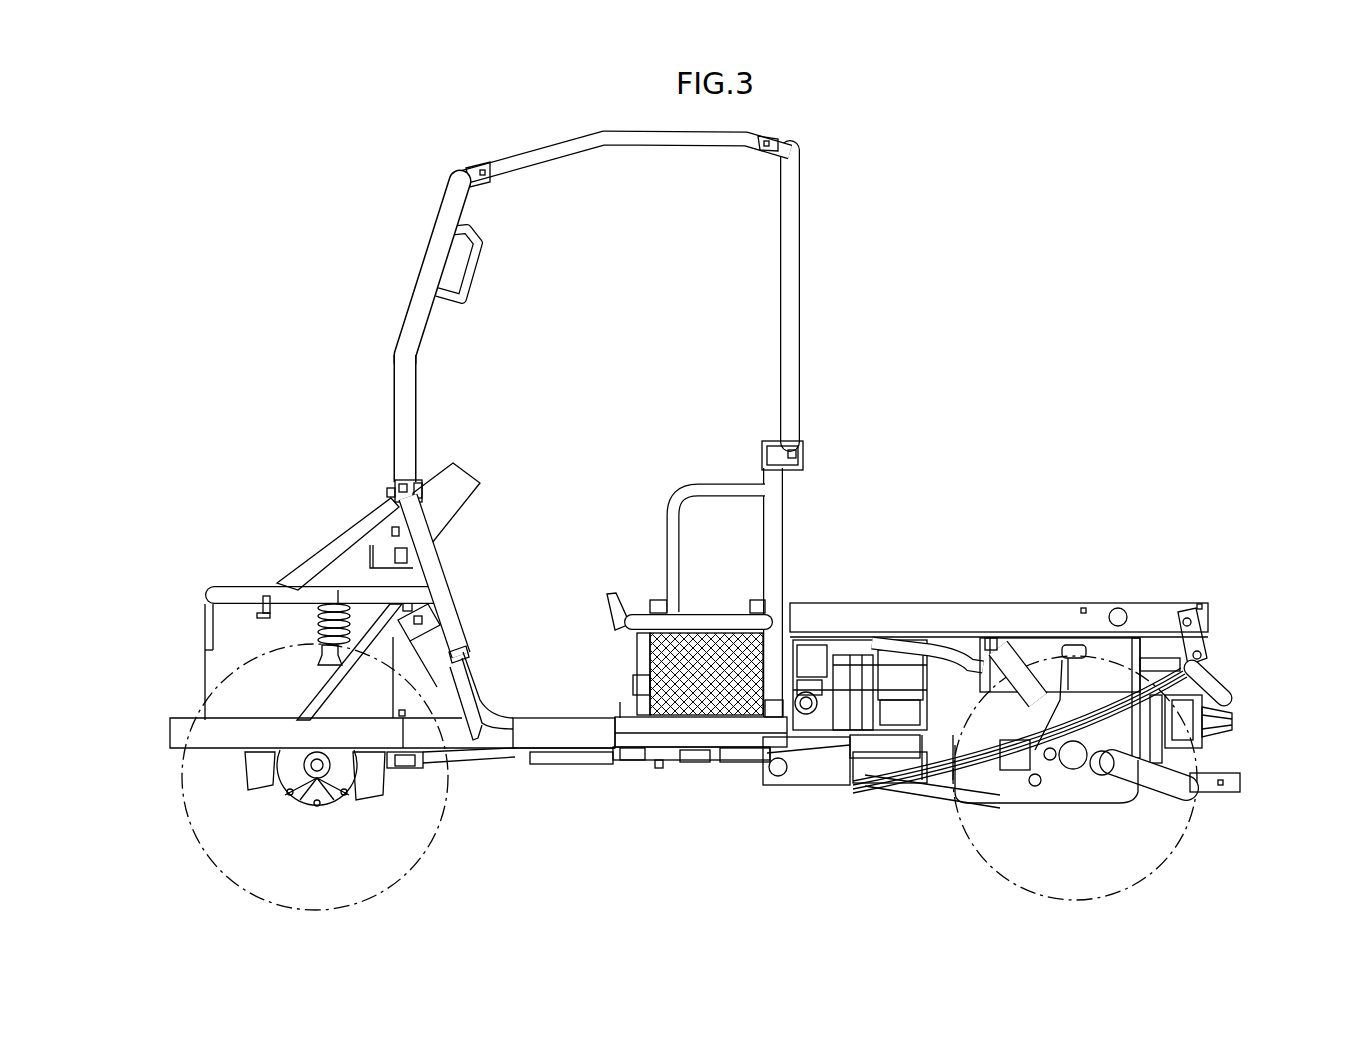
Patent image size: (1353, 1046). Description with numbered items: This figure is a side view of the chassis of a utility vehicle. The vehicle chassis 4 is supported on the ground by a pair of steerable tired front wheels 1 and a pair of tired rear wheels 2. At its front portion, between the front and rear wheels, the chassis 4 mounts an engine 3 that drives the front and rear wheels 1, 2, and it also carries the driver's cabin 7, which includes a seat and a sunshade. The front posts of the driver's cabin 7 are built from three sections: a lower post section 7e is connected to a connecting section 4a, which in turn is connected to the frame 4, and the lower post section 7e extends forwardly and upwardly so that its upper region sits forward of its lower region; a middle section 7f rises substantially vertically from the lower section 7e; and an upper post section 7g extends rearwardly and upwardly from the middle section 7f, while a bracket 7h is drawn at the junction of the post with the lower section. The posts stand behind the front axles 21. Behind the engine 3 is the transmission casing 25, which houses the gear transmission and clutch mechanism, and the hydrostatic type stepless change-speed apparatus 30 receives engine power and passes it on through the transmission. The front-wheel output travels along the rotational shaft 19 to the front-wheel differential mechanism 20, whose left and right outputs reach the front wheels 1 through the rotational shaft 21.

The front wheels 1 is at (197, 851).
The rear wheels 2 is at (1181, 829).
The engine 3 is at (838, 697).
The vehicle chassis 4 is at (920, 613).
The connecting section 4a is at (468, 650).
The driver's cabin 7 is at (449, 367).
The lower post section 7e is at (443, 607).
The middle section 7f is at (428, 418).
The upper post section 7g is at (433, 271).
The connecting bracket 7h is at (394, 491).
The rotational shaft 19 is at (470, 752).
The front-wheel differential mechanism 20 is at (317, 828).
The rotational shaft 21 is at (326, 766).
The transmission casing 25 is at (1007, 763).
The hydrostatic type stepless change-speed apparatus 30 is at (1236, 718).